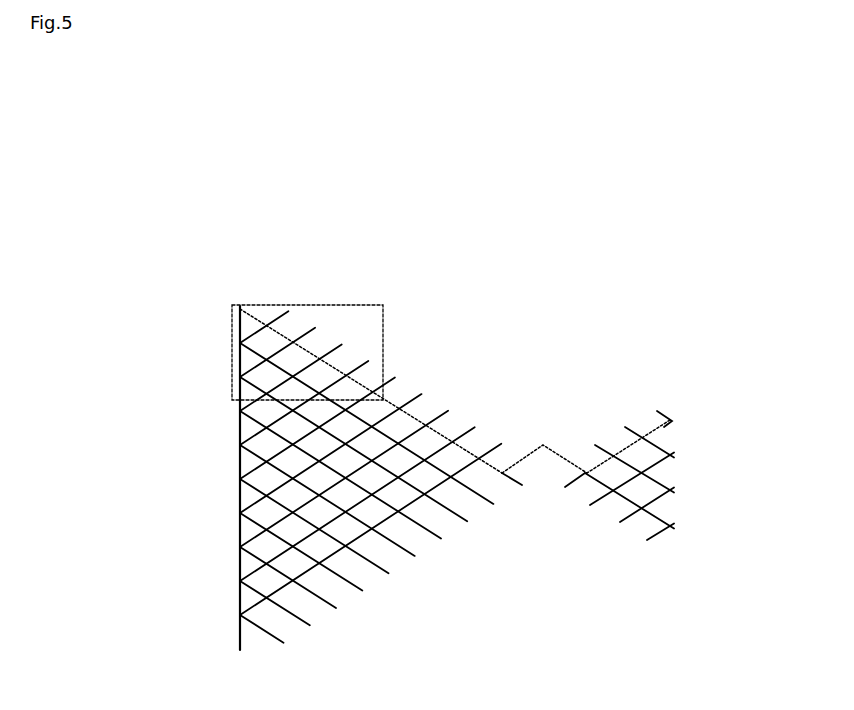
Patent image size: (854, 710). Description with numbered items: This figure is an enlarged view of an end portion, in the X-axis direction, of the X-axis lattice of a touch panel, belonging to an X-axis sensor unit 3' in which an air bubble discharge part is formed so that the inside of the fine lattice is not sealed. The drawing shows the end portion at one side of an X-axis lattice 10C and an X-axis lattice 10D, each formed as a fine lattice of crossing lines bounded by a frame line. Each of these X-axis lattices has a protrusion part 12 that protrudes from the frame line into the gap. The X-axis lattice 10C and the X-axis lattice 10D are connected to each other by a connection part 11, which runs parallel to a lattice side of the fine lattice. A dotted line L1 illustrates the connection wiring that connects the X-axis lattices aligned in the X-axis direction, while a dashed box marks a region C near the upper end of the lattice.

The X-axis sensor unit 3' is at (326, 483).
The region C is at (363, 305).
The connection part 11 is at (520, 457).
The protrusion part 12 is at (530, 487).
The X-axis lattice 10C is at (312, 608).
The X-axis lattice 10D is at (622, 497).
The dotted line L1 is at (660, 431).